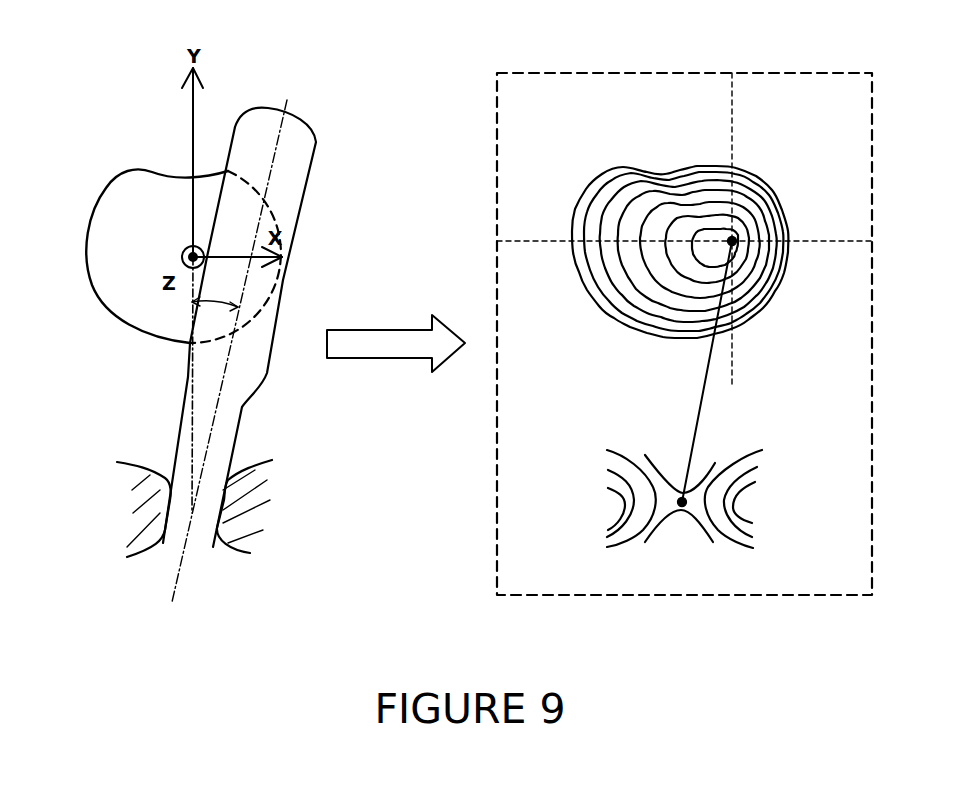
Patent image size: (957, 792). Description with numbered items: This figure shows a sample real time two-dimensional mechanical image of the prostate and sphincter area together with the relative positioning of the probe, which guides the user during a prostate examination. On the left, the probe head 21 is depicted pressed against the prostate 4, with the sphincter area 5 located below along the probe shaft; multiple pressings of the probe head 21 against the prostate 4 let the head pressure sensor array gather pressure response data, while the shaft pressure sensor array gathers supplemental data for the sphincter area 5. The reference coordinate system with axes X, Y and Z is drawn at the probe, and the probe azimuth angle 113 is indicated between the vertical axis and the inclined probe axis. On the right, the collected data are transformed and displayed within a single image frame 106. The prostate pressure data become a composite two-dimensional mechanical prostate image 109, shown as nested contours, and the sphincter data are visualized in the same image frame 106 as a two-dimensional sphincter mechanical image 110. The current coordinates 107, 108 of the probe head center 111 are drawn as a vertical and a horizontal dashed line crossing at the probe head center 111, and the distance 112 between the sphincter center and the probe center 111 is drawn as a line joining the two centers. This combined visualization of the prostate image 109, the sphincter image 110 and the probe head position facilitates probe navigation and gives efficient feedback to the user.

The prostate 4 is at (108, 255).
The sphincter area 5 is at (147, 505).
The probe head 21 is at (267, 110).
The image frame 106 is at (548, 73).
The current coordinate of the probe head center 107 is at (733, 110).
The current coordinate of the probe head center 108 is at (528, 241).
The two-dimensional mechanical prostate image 109 is at (622, 295).
The two-dimensional sphincter mechanical image 110 is at (653, 508).
The probe head center 111 is at (740, 243).
The distance between sphincter center and probe center 112 is at (697, 435).
The probe azimuth angle 113 is at (217, 305).